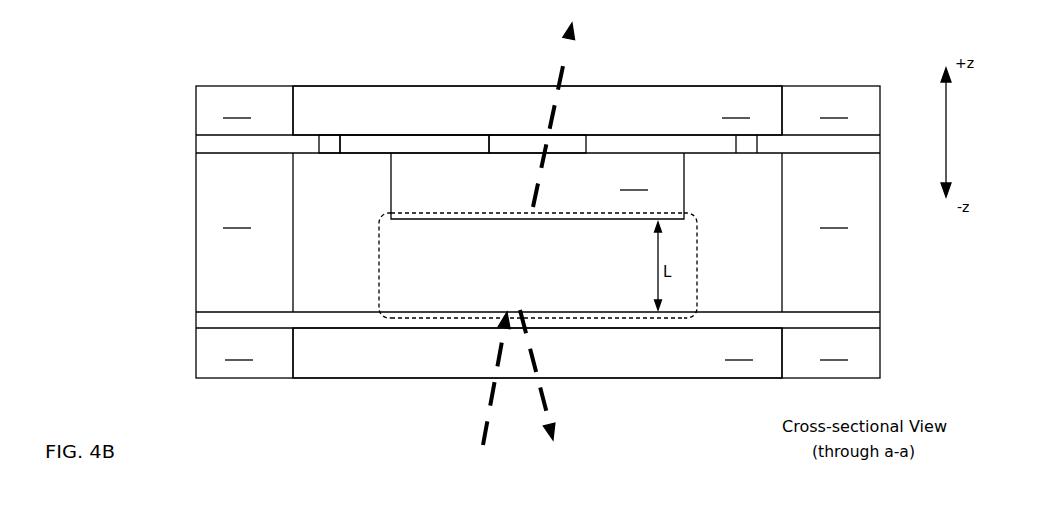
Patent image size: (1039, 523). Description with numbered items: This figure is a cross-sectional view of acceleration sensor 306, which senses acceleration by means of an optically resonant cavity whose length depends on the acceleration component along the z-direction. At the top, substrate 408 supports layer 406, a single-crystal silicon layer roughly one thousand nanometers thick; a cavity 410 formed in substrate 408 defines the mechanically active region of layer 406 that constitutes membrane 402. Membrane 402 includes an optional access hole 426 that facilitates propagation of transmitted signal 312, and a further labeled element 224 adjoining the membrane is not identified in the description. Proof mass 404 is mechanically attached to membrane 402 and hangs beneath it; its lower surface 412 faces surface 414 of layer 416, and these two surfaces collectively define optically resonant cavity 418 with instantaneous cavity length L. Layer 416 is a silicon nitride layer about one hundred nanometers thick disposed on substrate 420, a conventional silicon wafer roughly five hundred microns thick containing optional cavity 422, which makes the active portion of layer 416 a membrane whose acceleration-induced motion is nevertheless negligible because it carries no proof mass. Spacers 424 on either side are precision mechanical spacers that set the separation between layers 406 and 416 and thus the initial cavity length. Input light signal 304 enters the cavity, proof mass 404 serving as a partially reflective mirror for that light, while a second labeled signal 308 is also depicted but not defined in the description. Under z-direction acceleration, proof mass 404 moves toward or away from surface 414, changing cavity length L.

The acceleration sensor 306 is at (90, 70).
The substrate 408 is at (538, 110).
The cavity 410 is at (537, 110).
The layer 406 is at (501, 158).
The sidewall / spacer element 224 is at (296, 99).
The membrane 402 is at (428, 99).
The access hole 426 is at (599, 99).
The proof mass 404 is at (537, 186).
The spacers 424 is at (535, 232).
The optically resonant cavity 418 is at (500, 258).
The surface of proof mass 412 is at (537, 233).
The surface of layer 414 is at (537, 297).
The layer 416 is at (501, 306).
The substrate 420 is at (536, 353).
The cavity 422 is at (537, 353).
The transmitted signal 312 is at (590, 103).
The input light signal 304 is at (459, 378).
The light path (reflected) 308 is at (573, 387).